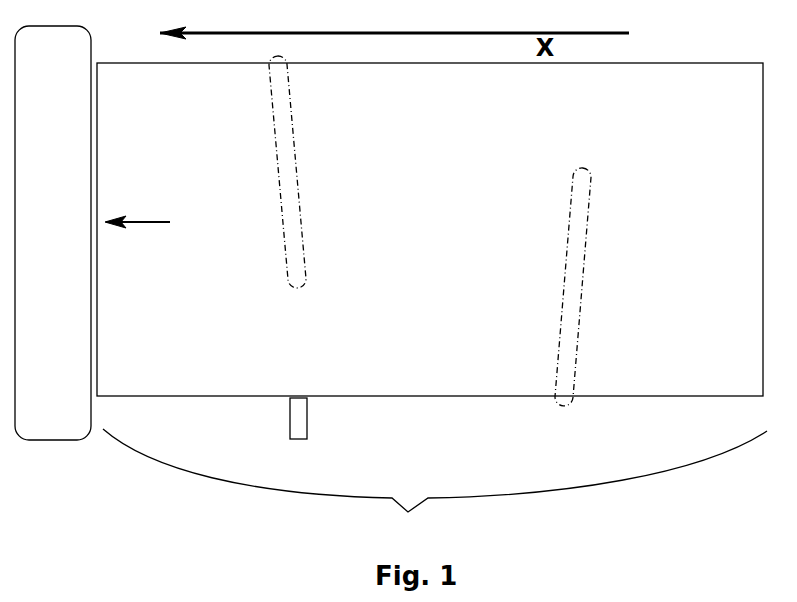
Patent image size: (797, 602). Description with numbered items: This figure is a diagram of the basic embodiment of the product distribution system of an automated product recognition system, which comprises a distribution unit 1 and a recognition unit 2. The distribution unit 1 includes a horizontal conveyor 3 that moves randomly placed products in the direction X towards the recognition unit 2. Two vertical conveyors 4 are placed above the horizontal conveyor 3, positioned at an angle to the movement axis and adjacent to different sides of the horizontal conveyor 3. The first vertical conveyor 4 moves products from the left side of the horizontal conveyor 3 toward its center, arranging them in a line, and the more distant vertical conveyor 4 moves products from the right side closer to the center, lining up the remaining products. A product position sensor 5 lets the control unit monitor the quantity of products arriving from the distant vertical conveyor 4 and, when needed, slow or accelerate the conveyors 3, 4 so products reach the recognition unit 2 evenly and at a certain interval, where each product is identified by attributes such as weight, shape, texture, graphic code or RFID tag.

The distribution unit 1 is at (435, 489).
The recognition unit 2 is at (60, 233).
The horizontal conveyor 3 is at (627, 62).
The vertical conveyor 4 is at (298, 288).
The product position sensor 5 is at (298, 440).